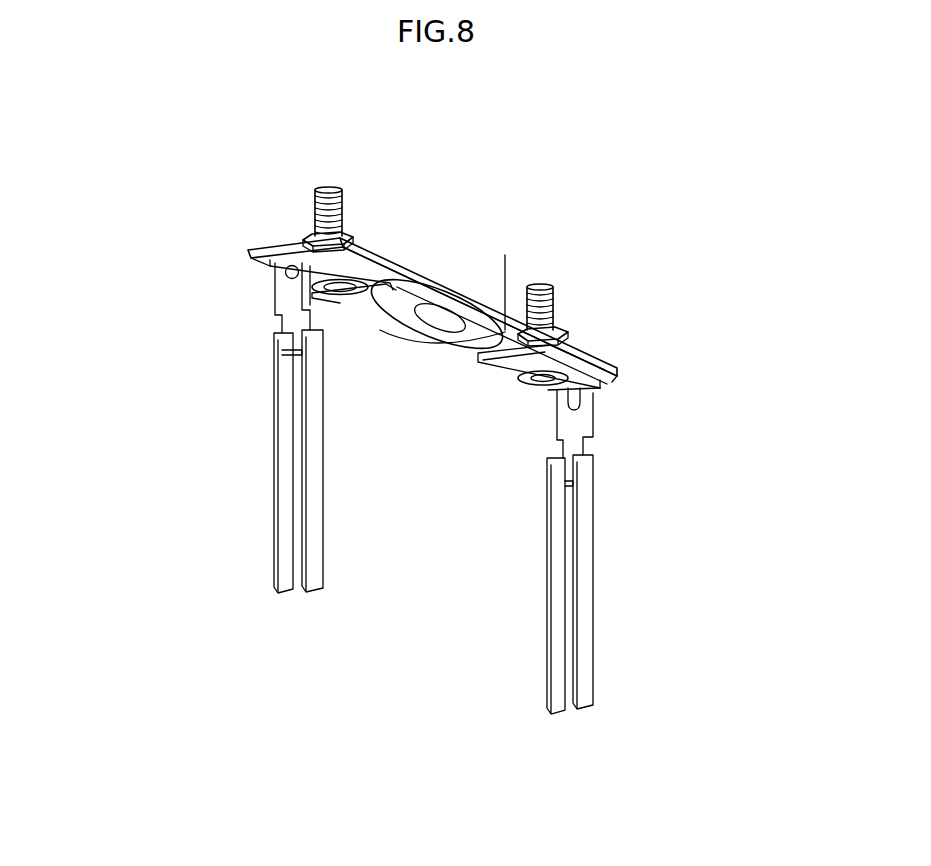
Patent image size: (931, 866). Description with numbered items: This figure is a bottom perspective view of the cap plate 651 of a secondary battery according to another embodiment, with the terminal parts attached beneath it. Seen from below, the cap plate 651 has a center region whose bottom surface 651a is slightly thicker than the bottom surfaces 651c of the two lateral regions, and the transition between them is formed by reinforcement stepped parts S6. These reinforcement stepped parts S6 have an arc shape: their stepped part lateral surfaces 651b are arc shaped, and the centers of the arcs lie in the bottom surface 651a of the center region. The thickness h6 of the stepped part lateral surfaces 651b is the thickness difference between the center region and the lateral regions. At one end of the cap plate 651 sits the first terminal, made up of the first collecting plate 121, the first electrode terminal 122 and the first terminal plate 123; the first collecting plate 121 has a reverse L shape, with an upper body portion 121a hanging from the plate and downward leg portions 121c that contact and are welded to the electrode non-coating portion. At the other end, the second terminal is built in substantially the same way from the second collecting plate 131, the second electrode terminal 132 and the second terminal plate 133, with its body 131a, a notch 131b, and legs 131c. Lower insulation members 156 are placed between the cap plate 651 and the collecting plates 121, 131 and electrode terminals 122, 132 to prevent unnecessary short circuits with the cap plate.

The first collecting plate 121 is at (229, 428).
The terminal body of first electrode terminal 121a is at (284, 294).
The legs of first electrode terminal 121c is at (276, 421).
The first electrode terminal 122 is at (324, 189).
The first terminal plate 123 is at (304, 238).
The second collecting plate 131 is at (617, 542).
The terminal body of second electrode terminal 131a is at (576, 428).
The notch of second electrode terminal 131b is at (595, 402).
The legs of second electrode terminal 131c is at (582, 586).
The second electrode terminal 132 is at (540, 286).
The second terminal plate 133 is at (578, 323).
The lower insulation member 156 is at (257, 262).
The cap plate 651 is at (402, 262).
The bottom surface of center region 651a is at (406, 330).
The stepped part lateral surface 651b is at (468, 345).
The bottom surface of lateral region 651c is at (495, 348).
The thickness of stepped part lateral surfaces h6 is at (537, 275).
The reinforcement stepped parts S6 is at (532, 445).